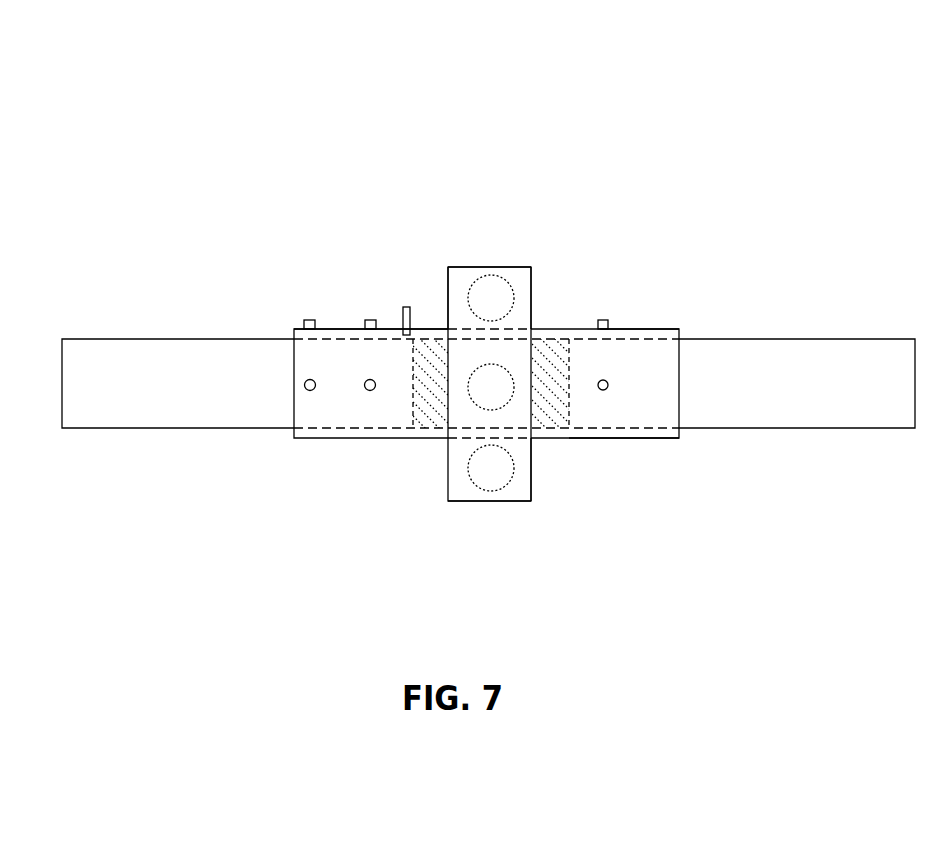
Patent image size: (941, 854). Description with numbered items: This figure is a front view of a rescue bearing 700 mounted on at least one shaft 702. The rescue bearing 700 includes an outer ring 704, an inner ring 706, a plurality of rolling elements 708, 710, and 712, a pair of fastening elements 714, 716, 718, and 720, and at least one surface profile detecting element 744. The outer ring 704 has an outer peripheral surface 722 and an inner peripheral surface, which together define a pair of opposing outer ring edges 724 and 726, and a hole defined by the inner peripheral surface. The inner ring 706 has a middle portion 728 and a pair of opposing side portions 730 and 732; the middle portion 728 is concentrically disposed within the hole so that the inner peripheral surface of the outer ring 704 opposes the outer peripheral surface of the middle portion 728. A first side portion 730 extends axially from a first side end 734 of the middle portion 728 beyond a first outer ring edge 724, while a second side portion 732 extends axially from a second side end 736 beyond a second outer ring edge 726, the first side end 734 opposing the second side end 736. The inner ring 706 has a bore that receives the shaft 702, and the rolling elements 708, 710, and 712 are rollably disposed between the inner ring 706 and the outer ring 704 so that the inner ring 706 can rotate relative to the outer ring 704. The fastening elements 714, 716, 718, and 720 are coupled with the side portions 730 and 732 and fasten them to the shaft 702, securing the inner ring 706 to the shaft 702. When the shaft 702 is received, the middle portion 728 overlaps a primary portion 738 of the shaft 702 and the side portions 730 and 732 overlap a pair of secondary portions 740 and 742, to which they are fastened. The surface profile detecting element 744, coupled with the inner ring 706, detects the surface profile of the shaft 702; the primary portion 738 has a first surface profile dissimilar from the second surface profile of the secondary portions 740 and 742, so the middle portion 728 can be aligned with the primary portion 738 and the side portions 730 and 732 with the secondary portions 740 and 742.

The rescue bearing 700 is at (506, 80).
The shaft 702 is at (488, 344).
The outer ring 704 is at (475, 235).
The inner ring 706 is at (582, 297).
The rolling element 708 is at (500, 255).
The rolling element 710 is at (440, 425).
The rolling element 712 is at (459, 508).
The fastening element 714 is at (340, 288).
The fastening element 716 is at (338, 453).
The fastening element 718 is at (693, 401).
The fastening element 720 is at (658, 431).
The outer peripheral surface 722 is at (516, 212).
The first outer ring edge 724 is at (418, 280).
The second outer ring edge 726 is at (559, 280).
The middle portion 728 is at (567, 501).
The first side portion 730 is at (343, 273).
The second side portion 732 is at (670, 282).
The first side end 734 is at (415, 416).
The second side end 736 is at (554, 518).
The primary portion 738 is at (595, 418).
The secondary portion 740 is at (350, 443).
The secondary portion 742 is at (646, 496).
The surface profile detecting element 744 is at (368, 266).